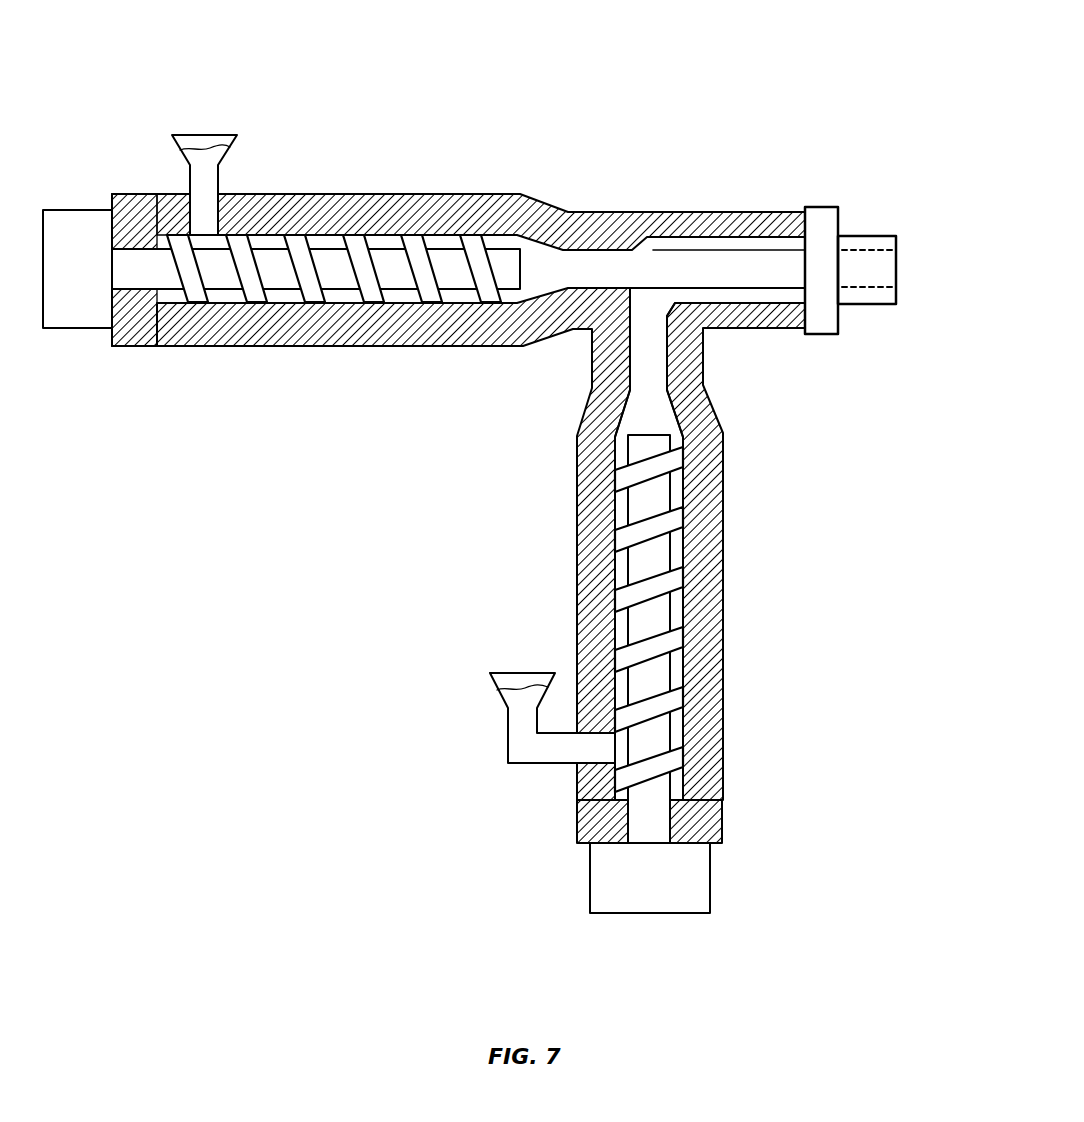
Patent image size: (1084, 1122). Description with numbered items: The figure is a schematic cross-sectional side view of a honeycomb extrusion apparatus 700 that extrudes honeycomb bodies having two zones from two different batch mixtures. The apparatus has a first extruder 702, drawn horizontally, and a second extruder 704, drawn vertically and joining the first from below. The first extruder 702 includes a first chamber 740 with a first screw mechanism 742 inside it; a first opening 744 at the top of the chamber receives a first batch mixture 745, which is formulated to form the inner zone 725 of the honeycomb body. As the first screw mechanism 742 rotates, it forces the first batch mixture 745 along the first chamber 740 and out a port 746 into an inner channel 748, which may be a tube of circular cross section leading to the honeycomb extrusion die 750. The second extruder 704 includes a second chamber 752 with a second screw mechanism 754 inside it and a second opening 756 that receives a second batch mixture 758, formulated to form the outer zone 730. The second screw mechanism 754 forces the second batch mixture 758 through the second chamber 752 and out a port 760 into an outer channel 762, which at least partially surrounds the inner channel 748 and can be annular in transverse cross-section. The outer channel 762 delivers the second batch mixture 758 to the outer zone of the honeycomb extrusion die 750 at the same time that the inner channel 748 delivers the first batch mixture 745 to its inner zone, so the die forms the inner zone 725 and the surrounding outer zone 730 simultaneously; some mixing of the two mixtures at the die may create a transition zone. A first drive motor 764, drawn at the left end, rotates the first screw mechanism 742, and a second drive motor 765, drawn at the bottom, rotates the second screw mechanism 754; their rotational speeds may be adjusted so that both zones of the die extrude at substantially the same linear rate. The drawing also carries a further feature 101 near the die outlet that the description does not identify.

The honeycomb extrusion apparatus 700 is at (318, 52).
The first extruder 702 is at (438, 186).
The second extruder 704 is at (733, 531).
The first opening 744 is at (202, 124).
The first batch mixture 745 is at (207, 158).
The first chamber 740 is at (288, 295).
The first screw mechanism 742 is at (404, 295).
The port 746 is at (543, 263).
The inner channel 748 is at (653, 265).
The honeycomb extrusion die 750 is at (820, 207).
The outer zone 730 is at (868, 240).
The inner zone 725 is at (882, 267).
The extruded filament 101 is at (862, 322).
The port 760 is at (640, 413).
The second chamber 752 is at (620, 514).
The second screw mechanism 754 is at (625, 572).
The second opening 756 is at (521, 658).
The second batch mixture 758 is at (517, 700).
The outer channel 762 is at (725, 296).
The first drive motor 764 is at (77, 269).
The second drive motor 765 is at (650, 878).